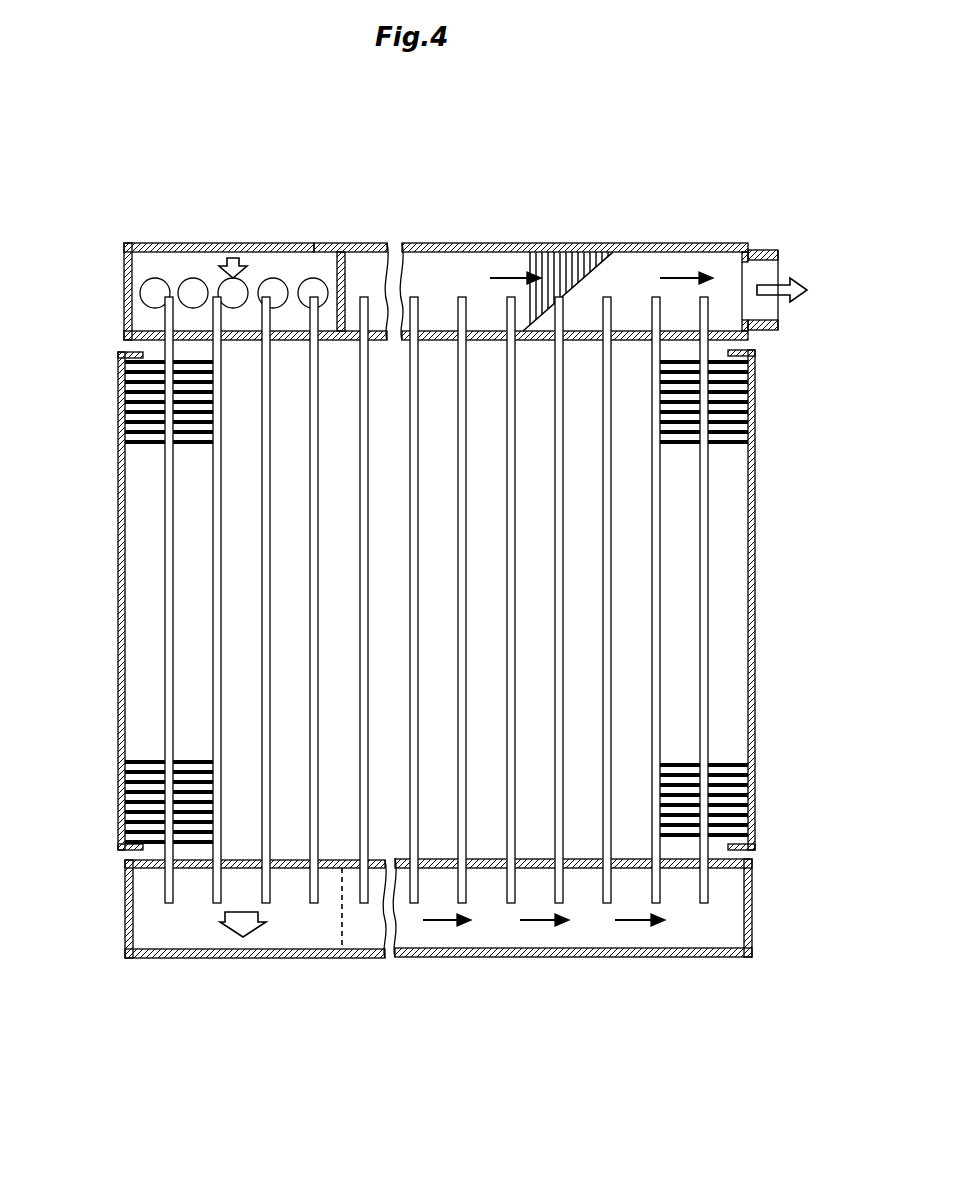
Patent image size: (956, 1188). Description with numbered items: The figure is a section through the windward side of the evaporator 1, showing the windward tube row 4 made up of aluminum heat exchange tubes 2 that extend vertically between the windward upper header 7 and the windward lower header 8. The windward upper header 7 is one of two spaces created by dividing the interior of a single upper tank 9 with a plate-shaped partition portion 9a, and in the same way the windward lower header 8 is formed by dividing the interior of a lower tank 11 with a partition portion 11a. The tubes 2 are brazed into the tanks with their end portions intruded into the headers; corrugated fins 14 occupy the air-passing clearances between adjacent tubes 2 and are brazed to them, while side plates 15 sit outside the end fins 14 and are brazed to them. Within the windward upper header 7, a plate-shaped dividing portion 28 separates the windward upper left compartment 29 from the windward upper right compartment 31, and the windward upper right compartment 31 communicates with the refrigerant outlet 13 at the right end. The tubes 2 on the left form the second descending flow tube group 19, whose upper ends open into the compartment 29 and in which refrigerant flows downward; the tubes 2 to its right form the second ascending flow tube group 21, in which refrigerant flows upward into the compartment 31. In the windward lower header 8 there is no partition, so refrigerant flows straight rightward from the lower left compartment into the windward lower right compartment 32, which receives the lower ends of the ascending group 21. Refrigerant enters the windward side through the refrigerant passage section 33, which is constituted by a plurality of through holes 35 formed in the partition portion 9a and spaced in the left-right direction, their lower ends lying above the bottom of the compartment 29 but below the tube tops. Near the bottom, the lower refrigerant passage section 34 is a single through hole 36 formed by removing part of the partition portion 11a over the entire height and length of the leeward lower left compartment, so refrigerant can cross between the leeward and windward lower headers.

The evaporator 1 is at (674, 172).
The heat exchange tubes 2 is at (213, 560).
The windward tube row 4 is at (708, 572).
The windward upper header 7 is at (457, 243).
The windward lower header 8 is at (457, 958).
The tank 9 is at (563, 222).
The partition portion 9a is at (637, 243).
The tank 11 is at (648, 975).
The partition portion 11a is at (512, 935).
The refrigerant outlet 13 is at (755, 268).
The corrugated fins 14 is at (672, 763).
The side plates 15 is at (118, 655).
The second descending flow tube group 19 is at (212, 860).
The second ascending flow tube group 21 is at (603, 880).
The dividing portion 28 is at (372, 243).
The windward upper left compartment 29 is at (688, 243).
The windward upper right compartment 31 is at (157, 243).
The windward lower right compartment 32 is at (712, 958).
The refrigerant passage section 33 is at (323, 243).
The lower refrigerant passage section 34 is at (332, 910).
The through holes 35 is at (280, 292).
The through hole 36 is at (333, 903).